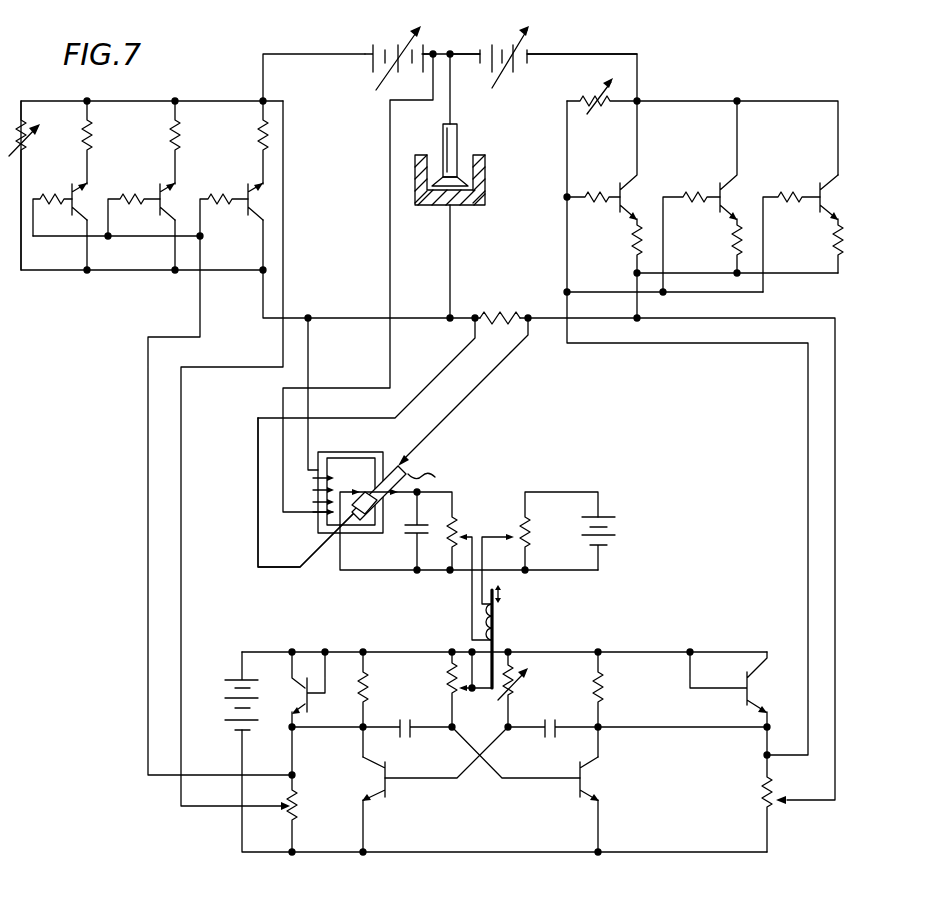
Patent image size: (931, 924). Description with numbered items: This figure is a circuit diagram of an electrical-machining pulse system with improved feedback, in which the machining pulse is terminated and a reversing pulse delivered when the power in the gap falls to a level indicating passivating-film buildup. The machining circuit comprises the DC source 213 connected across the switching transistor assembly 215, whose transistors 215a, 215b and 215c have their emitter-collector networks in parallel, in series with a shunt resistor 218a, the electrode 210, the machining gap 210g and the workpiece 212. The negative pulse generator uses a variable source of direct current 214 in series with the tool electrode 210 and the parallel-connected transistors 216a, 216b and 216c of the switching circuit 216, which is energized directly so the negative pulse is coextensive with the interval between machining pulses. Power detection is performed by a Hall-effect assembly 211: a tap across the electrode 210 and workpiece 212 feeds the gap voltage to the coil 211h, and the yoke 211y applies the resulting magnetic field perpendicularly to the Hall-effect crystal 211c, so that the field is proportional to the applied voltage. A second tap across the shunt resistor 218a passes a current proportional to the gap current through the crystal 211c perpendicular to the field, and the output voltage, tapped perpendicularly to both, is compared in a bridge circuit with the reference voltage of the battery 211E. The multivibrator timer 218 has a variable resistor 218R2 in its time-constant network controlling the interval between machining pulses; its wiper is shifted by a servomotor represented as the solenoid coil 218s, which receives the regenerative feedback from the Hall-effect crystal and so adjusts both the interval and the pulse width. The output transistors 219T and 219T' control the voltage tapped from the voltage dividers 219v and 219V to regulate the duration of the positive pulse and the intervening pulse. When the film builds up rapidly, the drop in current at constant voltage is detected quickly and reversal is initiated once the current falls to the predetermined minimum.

The electrode 210 is at (458, 132).
The machining gap 210g is at (447, 190).
The Hall-effect assembly 211 is at (258, 560).
The Hall-effect crystal 211c is at (407, 473).
The battery 211E is at (617, 527).
The coil 211h is at (313, 491).
The yoke 211y is at (393, 442).
The workpiece 212 is at (486, 187).
The DC source 213 is at (531, 51).
The variable source of direct current 214 is at (368, 47).
The switching transistor assembly 215 is at (808, 75).
The transistor 215a is at (618, 167).
The transistor 215b is at (713, 187).
The transistor 215c is at (816, 187).
The switching circuit 216 is at (152, 78).
The transistor 216a is at (64, 187).
The transistor 216b is at (150, 187).
The transistor 216c is at (238, 187).
The multivibrator timer 218 is at (518, 858).
The resistor 218a is at (543, 273).
The variable resistor 218R2 is at (447, 668).
The solenoid coil 218s is at (499, 620).
The output transistor 219T is at (738, 673).
The output transistor 219T' is at (291, 673).
The voltage divider 219V is at (293, 828).
The voltage divider 219v is at (773, 813).